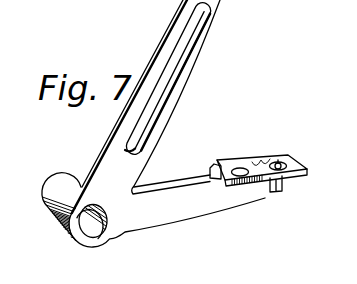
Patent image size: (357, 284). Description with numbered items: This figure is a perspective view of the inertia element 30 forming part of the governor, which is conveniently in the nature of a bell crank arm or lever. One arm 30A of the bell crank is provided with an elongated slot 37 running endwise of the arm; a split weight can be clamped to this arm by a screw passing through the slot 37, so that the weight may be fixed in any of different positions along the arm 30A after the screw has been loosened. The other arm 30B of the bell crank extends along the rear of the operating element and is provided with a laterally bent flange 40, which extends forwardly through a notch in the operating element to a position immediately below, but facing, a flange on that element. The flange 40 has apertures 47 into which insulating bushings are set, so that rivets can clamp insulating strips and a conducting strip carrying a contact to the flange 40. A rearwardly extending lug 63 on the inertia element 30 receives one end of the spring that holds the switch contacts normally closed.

The inertia element 30 is at (153, 123).
The arm 30A is at (207, 43).
The arm 30B is at (196, 207).
The elongated slot 37 is at (178, 41).
The laterally bent flange 40 is at (289, 157).
The apertures 47 is at (278, 160).
The lug 63 is at (275, 195).